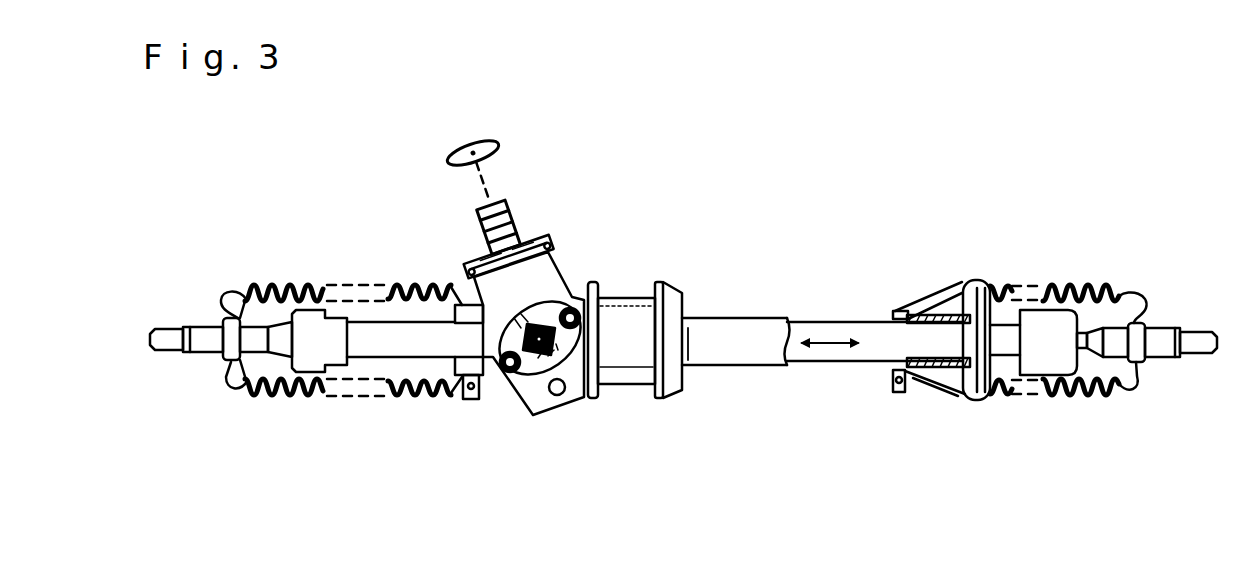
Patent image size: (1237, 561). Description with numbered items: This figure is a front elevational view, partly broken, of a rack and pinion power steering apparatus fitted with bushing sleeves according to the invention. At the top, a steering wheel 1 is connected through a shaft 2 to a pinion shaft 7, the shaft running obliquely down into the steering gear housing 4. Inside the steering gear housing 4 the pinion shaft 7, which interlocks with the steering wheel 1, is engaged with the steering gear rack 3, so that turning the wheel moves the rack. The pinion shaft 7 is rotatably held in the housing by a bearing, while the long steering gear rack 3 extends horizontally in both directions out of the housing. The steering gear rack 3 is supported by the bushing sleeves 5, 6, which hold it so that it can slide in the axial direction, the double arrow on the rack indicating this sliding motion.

The steering wheel 1 is at (455, 153).
The shaft 2 is at (482, 218).
The steering gear rack 3 is at (832, 330).
The steering gear housing 4 is at (565, 278).
The bushing sleeve 5 is at (480, 372).
The bushing sleeve 6 is at (910, 374).
The pinion shaft 7 is at (543, 380).